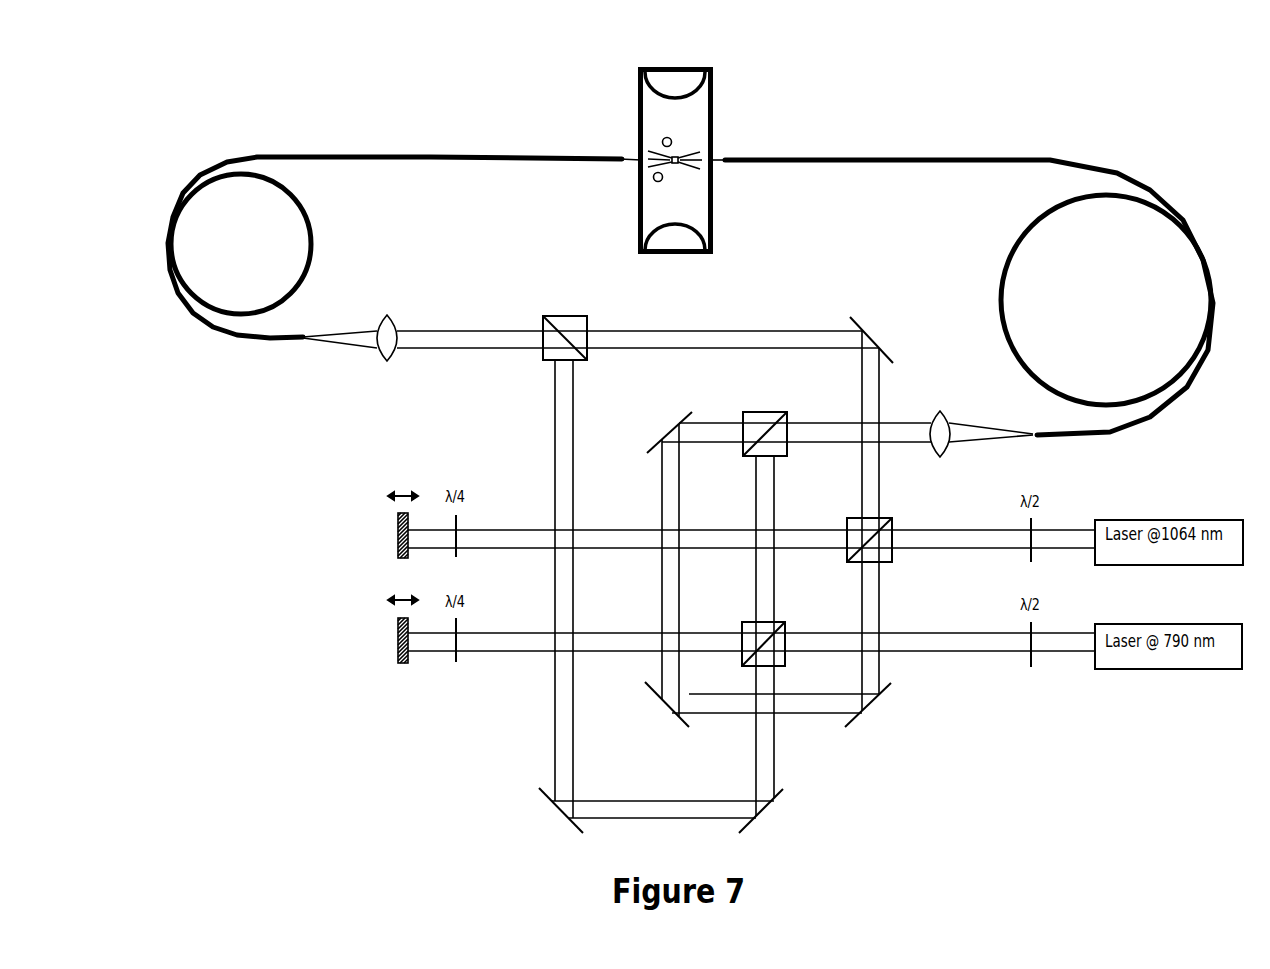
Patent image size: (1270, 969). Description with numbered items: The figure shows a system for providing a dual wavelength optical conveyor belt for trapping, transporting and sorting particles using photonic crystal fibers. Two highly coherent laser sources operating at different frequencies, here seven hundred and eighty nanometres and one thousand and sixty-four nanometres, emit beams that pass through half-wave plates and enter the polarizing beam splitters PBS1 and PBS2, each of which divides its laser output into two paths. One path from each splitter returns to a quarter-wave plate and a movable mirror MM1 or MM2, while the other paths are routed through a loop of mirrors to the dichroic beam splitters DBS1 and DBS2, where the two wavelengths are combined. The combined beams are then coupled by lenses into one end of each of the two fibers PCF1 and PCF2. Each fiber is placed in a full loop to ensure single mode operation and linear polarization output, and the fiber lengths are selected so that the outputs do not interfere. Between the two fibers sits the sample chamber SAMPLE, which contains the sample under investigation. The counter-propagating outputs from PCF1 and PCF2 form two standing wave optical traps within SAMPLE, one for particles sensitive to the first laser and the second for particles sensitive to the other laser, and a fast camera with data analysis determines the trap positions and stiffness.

The photonic crystal fiber PCF1 is at (395, 232).
The photonic crystal fiber PCF2 is at (969, 282).
The sample chamber SAMPLE is at (691, 146).
The dichroic beam splitter DBS1 is at (580, 327).
The dichroic beam splitter DBS2 is at (783, 419).
The polarizing beam splitter PBS1 is at (885, 525).
The polarizing beam splitter PBS2 is at (781, 630).
The movable mirror MM1 is at (383, 525).
The movable mirror MM2 is at (383, 629).